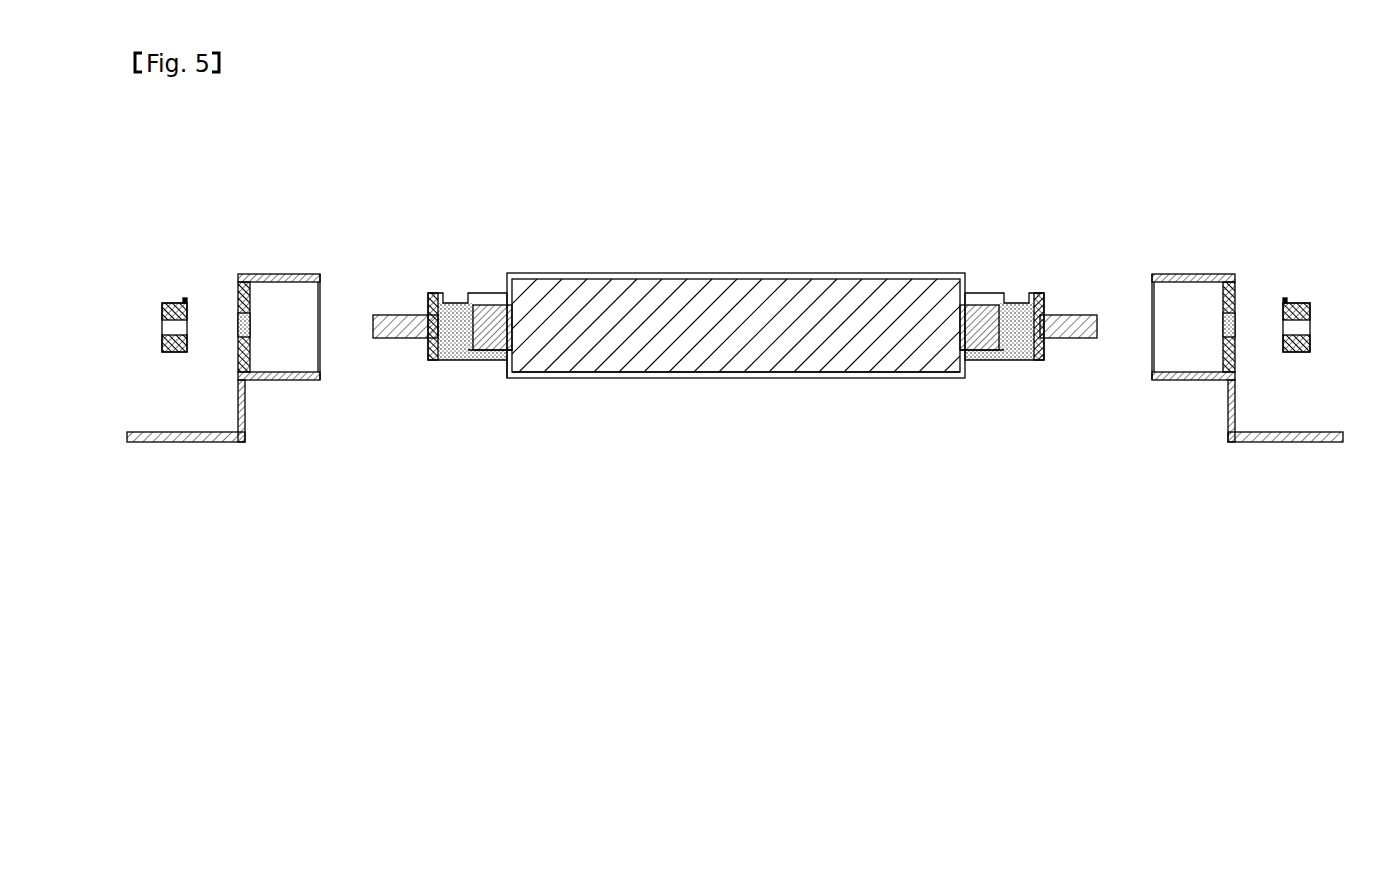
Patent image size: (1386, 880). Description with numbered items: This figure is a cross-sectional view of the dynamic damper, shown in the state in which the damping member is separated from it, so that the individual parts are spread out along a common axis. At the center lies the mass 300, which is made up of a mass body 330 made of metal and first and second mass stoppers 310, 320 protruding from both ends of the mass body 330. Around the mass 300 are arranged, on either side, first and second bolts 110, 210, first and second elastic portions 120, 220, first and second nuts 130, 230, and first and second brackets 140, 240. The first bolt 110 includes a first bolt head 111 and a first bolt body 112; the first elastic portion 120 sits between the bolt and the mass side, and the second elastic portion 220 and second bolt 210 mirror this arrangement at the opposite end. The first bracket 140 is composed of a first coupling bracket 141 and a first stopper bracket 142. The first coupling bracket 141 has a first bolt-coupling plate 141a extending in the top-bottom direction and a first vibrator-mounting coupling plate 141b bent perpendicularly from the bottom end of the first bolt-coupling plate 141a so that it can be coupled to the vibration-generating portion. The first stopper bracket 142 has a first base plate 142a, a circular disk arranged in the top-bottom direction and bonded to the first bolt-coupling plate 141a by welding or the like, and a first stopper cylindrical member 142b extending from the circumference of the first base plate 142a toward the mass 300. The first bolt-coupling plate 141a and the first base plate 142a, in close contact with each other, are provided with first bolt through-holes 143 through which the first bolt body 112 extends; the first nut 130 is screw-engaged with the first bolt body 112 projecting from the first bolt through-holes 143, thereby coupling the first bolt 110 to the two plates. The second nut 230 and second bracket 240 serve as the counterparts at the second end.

The first bolt 110 is at (429, 243).
The first bolt head 111 is at (430, 305).
The first bolt body 112 is at (388, 313).
The first elastic portion 120 is at (463, 360).
The first nut 130 is at (168, 302).
The first bracket 140 is at (269, 388).
The first coupling bracket 141 is at (203, 500).
The first bolt-coupling plate 141a is at (245, 412).
The first vibrator-mounting coupling plate 141b is at (184, 501).
The first stopper bracket 142 is at (326, 415).
The first base plate 142a is at (249, 355).
The first stopper cylindrical member 142b is at (312, 380).
The first bolt through-holes 143 is at (238, 313).
The second bolt 210 is at (1065, 305).
The second elastic portion 220 is at (1020, 360).
The second nut 230 is at (1290, 303).
The second bracket 240 is at (1187, 264).
The mass 300 is at (735, 270).
The first mass stopper 310 is at (519, 378).
The second mass stopper 320 is at (980, 327).
The mass body 330 is at (730, 345).